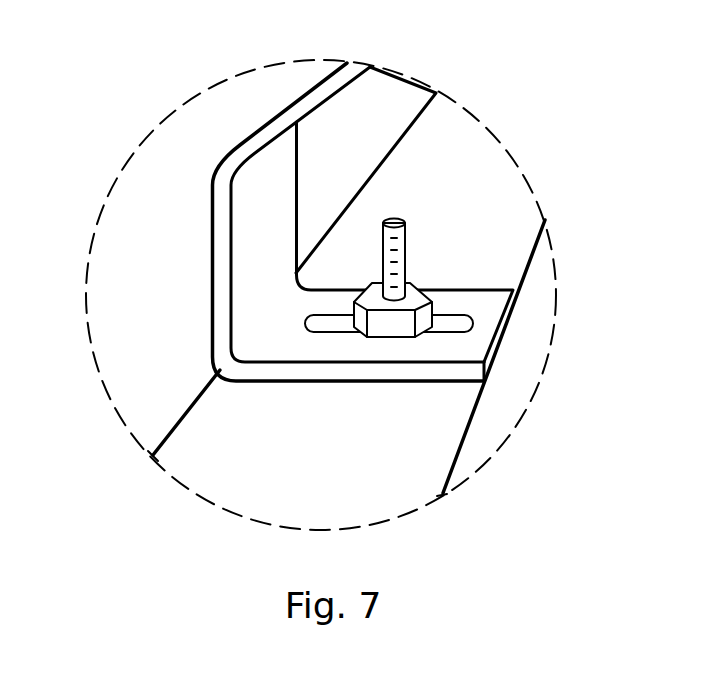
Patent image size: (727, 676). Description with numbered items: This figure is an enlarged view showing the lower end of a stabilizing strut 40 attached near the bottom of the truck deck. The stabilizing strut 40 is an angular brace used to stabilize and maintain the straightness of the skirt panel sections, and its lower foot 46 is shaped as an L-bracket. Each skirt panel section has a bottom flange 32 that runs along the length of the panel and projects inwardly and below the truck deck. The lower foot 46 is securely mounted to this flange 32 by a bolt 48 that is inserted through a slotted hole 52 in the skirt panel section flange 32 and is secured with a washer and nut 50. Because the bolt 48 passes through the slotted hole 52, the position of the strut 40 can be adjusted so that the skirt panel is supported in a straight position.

The bottom flange 32 is at (260, 453).
The stabilizing strut 40 is at (333, 87).
The lower foot 46 is at (462, 348).
The bolt 48 is at (407, 253).
The nut 50 is at (433, 304).
The slotted hole 52 is at (455, 321).